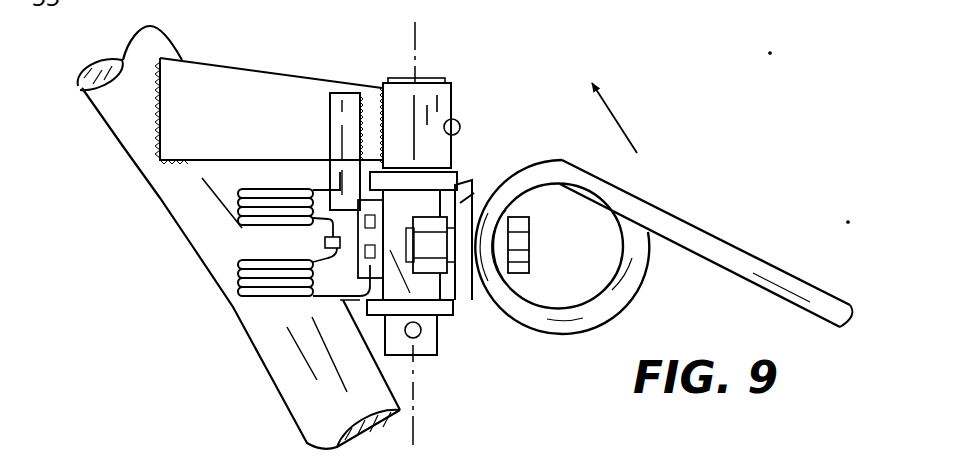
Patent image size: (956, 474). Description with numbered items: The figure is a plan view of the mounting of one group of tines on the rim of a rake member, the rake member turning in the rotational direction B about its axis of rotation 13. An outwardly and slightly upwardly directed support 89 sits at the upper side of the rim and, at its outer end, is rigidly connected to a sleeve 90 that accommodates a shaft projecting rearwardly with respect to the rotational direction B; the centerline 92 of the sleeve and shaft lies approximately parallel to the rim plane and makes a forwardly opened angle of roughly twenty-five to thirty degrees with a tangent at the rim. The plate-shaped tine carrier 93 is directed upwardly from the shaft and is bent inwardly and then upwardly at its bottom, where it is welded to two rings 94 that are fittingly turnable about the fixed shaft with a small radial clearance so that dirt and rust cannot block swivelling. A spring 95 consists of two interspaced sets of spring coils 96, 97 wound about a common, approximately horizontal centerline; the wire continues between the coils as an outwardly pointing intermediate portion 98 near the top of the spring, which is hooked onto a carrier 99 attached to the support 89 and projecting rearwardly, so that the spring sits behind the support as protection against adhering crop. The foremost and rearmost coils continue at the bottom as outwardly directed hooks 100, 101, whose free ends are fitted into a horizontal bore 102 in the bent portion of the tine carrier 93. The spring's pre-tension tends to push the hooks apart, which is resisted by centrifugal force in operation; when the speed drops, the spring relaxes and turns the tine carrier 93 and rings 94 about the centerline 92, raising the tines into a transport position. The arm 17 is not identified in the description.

The axis of rotation 13 is at (265, 367).
The arm 17 is at (765, 250).
The support 89 is at (235, 87).
The sleeve 90 is at (453, 97).
The centerline 92 is at (420, 24).
The tine carrier 93 is at (465, 190).
The rings 94 is at (452, 170).
The spring 95 is at (243, 232).
The spring coils 96 is at (273, 187).
The spring coils 97 is at (248, 290).
The intermediate portion 98 is at (312, 249).
The carrier 99 is at (328, 112).
The hook 100 is at (363, 195).
The hook 101 is at (340, 307).
The horizontal bore 102 is at (440, 320).
The rotational direction B is at (620, 122).